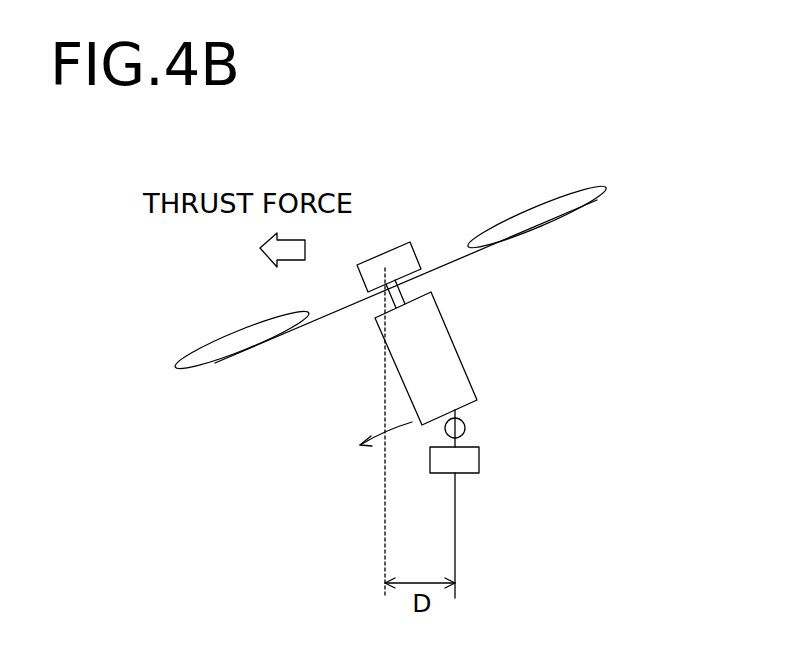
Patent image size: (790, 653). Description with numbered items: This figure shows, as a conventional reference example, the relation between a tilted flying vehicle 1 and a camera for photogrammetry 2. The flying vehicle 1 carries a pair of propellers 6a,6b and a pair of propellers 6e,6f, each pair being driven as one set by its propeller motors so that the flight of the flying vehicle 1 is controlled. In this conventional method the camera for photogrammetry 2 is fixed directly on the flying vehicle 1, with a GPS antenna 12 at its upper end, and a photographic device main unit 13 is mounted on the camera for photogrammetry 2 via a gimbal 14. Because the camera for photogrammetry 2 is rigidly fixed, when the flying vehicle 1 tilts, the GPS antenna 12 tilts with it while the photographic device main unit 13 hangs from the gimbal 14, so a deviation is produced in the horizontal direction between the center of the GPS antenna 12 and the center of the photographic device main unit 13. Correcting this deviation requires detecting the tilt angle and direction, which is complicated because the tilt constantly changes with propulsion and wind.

The flying vehicle 1 is at (442, 262).
The camera for photogrammetry 2 is at (457, 350).
The propellers 6a,6b is at (200, 312).
The propellers 6e,6f is at (576, 238).
The GPS antenna 12 is at (405, 243).
The photographic device main unit 13 is at (479, 460).
The gimbal 14 is at (465, 420).